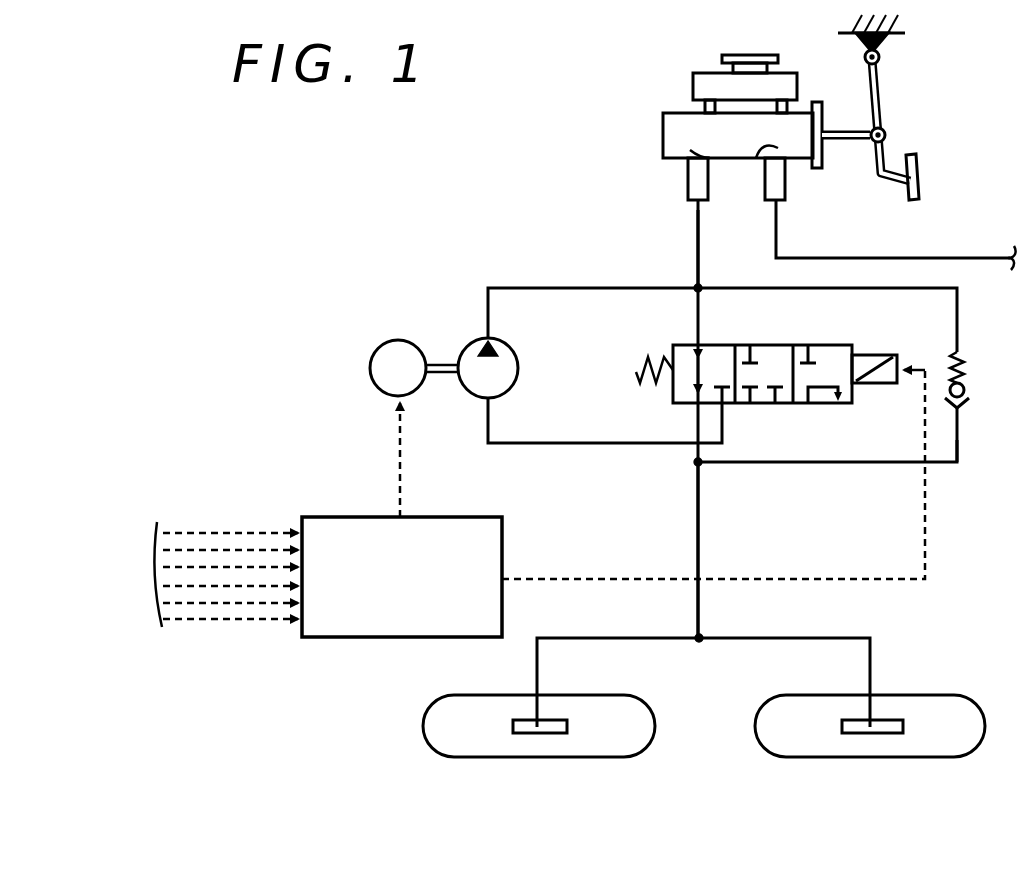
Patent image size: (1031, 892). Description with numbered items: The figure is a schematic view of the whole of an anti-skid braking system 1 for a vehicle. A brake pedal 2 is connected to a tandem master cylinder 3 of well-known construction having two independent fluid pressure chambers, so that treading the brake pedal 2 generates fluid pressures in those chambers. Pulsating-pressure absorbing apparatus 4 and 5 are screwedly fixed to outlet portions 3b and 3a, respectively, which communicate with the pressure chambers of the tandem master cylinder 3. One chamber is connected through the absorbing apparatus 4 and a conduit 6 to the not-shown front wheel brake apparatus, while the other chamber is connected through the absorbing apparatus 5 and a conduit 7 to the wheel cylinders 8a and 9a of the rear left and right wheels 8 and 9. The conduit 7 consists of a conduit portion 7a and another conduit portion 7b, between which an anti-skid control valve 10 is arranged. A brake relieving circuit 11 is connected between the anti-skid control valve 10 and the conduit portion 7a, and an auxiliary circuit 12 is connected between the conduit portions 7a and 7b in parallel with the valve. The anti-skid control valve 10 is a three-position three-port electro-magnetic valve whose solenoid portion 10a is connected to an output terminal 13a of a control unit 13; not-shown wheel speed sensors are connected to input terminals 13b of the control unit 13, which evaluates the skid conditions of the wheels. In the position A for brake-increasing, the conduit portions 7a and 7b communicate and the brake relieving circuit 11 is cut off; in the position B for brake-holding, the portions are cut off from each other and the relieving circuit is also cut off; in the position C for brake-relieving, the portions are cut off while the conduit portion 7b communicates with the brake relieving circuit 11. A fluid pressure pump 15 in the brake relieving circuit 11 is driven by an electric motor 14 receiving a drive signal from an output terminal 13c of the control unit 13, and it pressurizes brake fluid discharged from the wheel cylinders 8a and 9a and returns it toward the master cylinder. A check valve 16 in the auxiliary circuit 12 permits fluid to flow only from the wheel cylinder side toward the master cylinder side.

The anti-skid braking system 1 is at (942, 78).
The brake pedal 2 is at (920, 173).
The tandem master cylinder 3 is at (688, 70).
The outlet portion 3a is at (690, 150).
The outlet portion 3b is at (756, 158).
The pulsating-pressure absorbing apparatus 4 is at (787, 182).
The pulsating-pressure absorbing apparatus 5 is at (690, 178).
The conduit 6 is at (884, 258).
The conduit 7 is at (692, 272).
The conduit portion 7a is at (700, 250).
The conduit portion 7b is at (700, 525).
The rear left wheel 8 is at (630, 727).
The wheel cylinder 8a is at (539, 733).
The rear right wheel 9 is at (955, 727).
The wheel cylinder 9a is at (866, 733).
The anti-skid control valve 10 is at (658, 337).
The solenoid portion 10a is at (880, 385).
The brake relieving circuit 11 is at (572, 288).
The auxiliary circuit 12 is at (820, 462).
The control unit 13 is at (388, 637).
The output terminal 13a is at (632, 578).
The input terminals 13b is at (158, 565).
The output terminal 13c is at (398, 441).
The electric motor 14 is at (378, 345).
The fluid pressure pump 15 is at (466, 345).
The check valve 16 is at (968, 390).
The position for brake-increasing A is at (716, 345).
The position for brake-holding B is at (766, 345).
The position for brake-relieving C is at (826, 345).